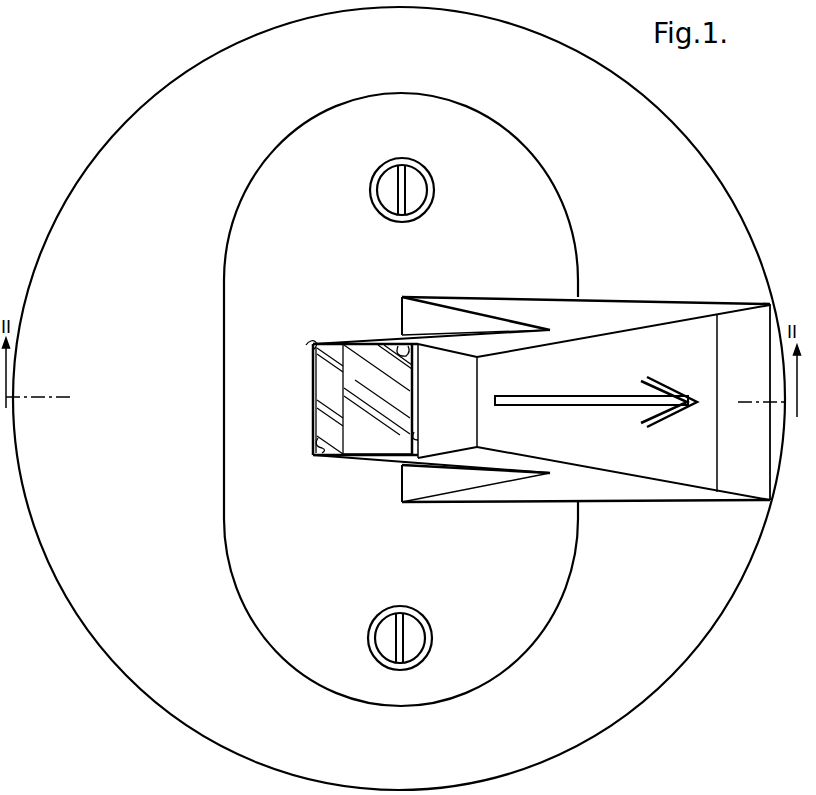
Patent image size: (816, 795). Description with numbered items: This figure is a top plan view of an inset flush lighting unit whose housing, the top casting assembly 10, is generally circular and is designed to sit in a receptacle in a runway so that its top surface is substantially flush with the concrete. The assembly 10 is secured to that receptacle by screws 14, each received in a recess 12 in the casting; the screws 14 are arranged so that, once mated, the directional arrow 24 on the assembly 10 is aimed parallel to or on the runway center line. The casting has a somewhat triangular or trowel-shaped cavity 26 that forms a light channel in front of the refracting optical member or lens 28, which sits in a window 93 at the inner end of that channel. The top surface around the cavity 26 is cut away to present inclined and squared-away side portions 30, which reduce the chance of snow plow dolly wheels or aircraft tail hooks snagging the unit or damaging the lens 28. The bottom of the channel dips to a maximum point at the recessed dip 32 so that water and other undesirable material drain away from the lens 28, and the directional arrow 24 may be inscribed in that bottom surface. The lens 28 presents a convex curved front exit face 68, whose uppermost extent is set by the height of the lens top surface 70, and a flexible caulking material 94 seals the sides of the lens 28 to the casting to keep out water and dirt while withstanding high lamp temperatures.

The top casting assembly 10 is at (187, 90).
The recess 12 is at (428, 182).
The screw 14 is at (385, 192).
The directional arrow 24 is at (607, 397).
The trowel-shaped cavity 26 is at (679, 470).
The lens 28 is at (364, 358).
The inclined side portions 30 is at (436, 320).
The recessed dip 32 is at (478, 389).
The exit face 68 is at (380, 442).
The top surface 70 is at (328, 396).
The window 93 is at (320, 444).
The caulking material 94 is at (309, 347).